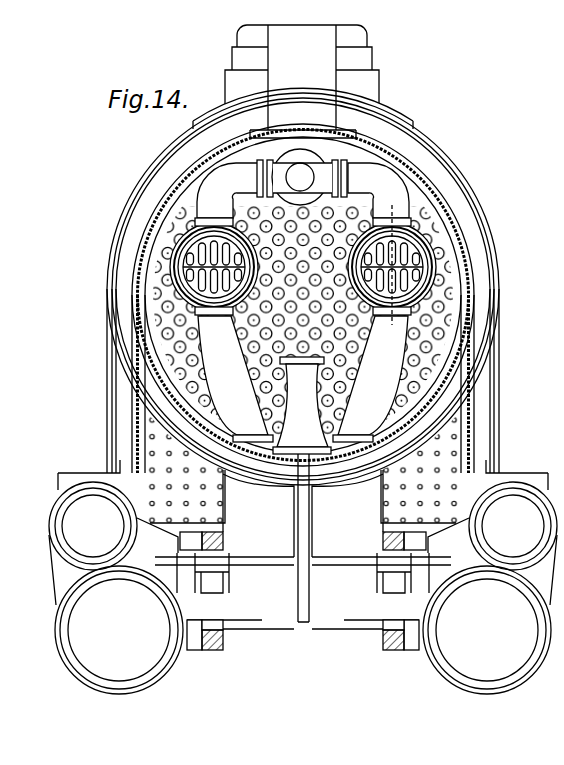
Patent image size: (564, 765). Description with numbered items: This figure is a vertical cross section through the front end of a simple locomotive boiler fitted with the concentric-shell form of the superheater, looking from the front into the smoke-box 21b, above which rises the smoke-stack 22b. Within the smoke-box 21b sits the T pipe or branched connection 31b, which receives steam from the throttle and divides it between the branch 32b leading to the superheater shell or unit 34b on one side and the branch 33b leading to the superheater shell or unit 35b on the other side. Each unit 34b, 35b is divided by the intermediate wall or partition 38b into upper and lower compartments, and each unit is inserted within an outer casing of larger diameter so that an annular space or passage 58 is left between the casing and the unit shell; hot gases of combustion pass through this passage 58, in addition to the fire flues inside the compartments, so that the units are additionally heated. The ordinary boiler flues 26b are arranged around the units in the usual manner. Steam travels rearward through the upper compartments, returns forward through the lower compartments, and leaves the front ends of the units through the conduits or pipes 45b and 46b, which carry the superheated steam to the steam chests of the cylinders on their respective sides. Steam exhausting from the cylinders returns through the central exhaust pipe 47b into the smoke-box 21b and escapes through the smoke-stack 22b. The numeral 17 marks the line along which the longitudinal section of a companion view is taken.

The flue axis 17 is at (391, 267).
The smoke-box 21b is at (355, 157).
The smoke-stack 22b is at (302, 81).
The flues 26b is at (165, 345).
The T pipe or branched connection 31b is at (302, 177).
The branch 32b is at (234, 237).
The branch 33b is at (371, 237).
The superheater shell or unit 34b is at (195, 264).
The superheater shell or unit 35b is at (430, 258).
The intermediate wall or partition 38b is at (13, 278).
The conduit or pipe 45b is at (217, 360).
The conduit or pipe 46b is at (373, 380).
The exhaust pipe 47b is at (302, 405).
The annular space or passage 58 is at (417, 238).